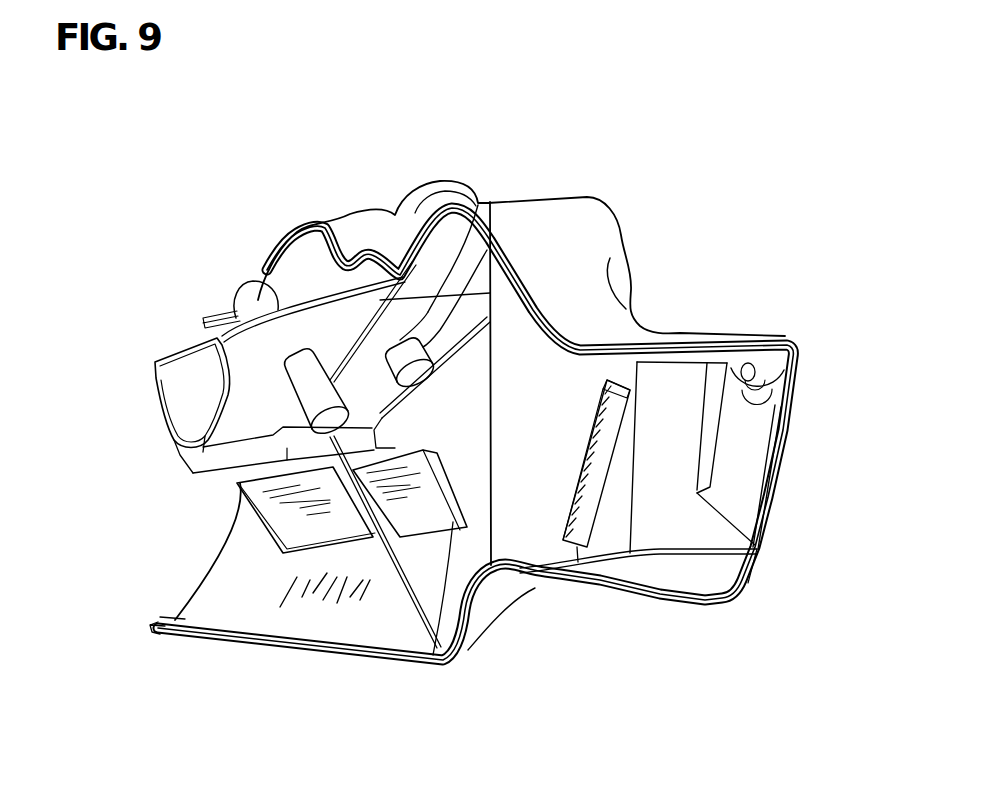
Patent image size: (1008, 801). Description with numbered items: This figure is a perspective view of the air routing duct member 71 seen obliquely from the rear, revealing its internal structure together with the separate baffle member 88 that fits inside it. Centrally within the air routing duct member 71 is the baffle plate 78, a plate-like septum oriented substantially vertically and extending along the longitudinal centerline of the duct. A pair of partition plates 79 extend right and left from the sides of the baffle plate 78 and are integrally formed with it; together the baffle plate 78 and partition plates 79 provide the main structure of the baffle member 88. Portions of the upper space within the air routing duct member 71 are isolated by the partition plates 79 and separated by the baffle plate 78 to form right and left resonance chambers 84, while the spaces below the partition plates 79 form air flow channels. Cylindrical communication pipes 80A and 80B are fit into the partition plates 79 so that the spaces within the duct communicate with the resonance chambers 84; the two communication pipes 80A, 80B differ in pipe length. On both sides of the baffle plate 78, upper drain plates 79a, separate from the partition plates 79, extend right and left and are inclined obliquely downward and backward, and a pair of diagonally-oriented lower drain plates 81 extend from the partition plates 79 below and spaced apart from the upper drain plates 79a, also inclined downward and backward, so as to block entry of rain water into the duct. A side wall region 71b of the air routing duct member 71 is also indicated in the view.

The air routing duct member 71 is at (613, 130).
The side wall of housing 71b is at (753, 457).
The baffle plate 78 is at (300, 610).
The partition plates 79 is at (435, 310).
The upper drain plates 79a is at (203, 463).
The communication pipe 80A is at (255, 282).
The communication pipe 80B is at (425, 342).
The lower drain plates 81 is at (280, 525).
The resonance chambers 84 is at (457, 238).
The baffle member 88 is at (180, 283).